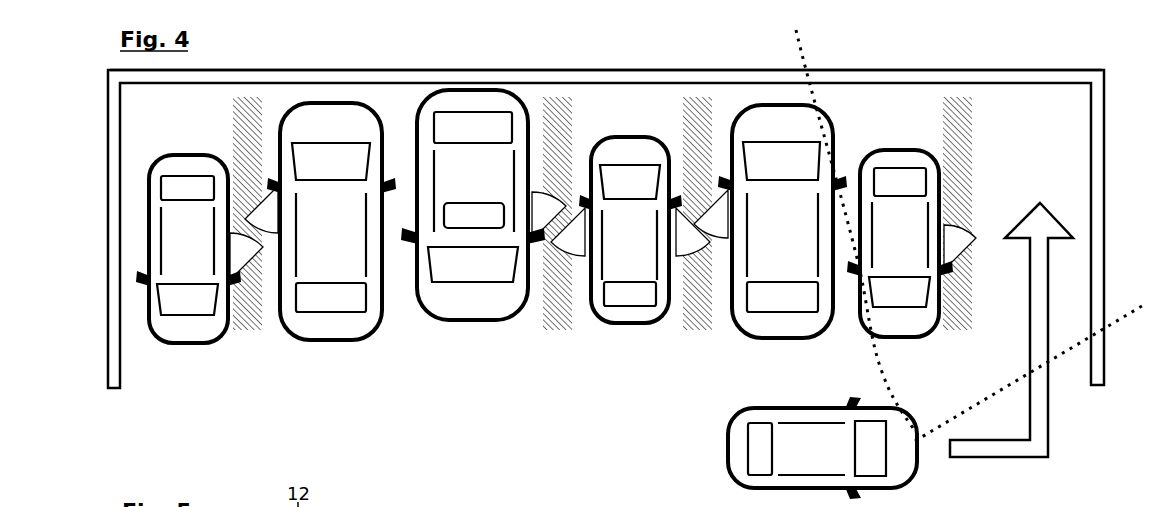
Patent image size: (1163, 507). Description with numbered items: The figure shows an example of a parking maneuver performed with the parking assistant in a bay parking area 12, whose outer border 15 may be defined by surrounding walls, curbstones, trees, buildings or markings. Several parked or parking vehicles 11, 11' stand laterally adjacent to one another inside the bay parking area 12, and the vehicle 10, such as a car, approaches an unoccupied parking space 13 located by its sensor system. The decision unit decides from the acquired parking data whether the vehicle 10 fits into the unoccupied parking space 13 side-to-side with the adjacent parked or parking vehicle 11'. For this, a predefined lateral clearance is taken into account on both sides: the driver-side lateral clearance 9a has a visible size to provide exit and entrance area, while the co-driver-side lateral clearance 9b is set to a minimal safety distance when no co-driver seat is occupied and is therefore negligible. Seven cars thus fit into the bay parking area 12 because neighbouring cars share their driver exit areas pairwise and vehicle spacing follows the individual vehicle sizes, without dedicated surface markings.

The driver-side lateral clearance 9a is at (246, 330).
The co-driver-side lateral clearance 9b is at (690, 330).
The vehicle 10 is at (728, 446).
The parked or parking vehicle 11 is at (491, 245).
The parked or parking vehicle 11' is at (900, 271).
The bay parking area 12 is at (304, 54).
The unoccupied parking space 13 is at (1052, 184).
The outer border 15 is at (527, 70).